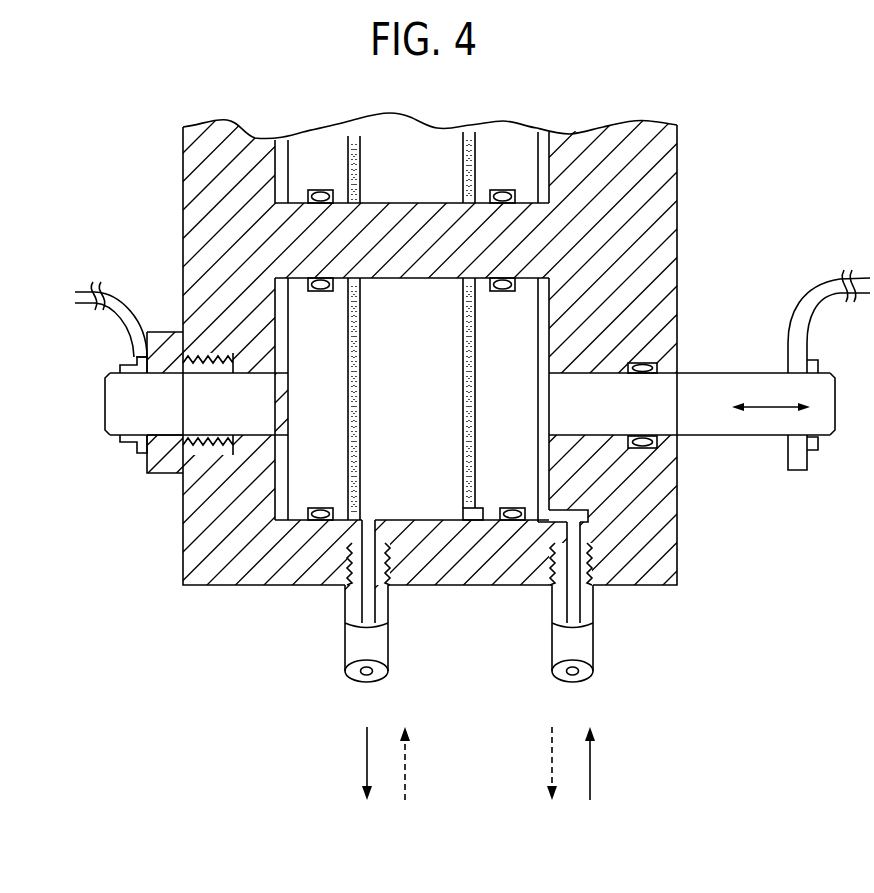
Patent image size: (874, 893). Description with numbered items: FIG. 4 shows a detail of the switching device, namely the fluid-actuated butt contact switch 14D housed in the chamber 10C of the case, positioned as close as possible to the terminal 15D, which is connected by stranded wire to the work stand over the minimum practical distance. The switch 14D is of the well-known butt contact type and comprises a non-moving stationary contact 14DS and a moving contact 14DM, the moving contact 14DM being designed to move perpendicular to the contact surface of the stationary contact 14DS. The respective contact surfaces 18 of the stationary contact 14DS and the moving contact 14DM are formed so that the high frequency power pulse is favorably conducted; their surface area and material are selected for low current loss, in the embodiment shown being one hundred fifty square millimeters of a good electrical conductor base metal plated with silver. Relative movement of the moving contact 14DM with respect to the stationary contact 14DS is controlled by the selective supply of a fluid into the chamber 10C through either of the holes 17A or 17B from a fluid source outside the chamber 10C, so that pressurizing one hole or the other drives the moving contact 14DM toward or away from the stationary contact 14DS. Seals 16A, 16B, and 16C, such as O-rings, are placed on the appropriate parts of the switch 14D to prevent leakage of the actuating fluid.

The chamber 10C is at (180, 650).
The switch 14D is at (202, 513).
The stationary contact 14DS is at (310, 323).
The moving contact 14DM is at (530, 330).
The terminal 15D is at (118, 405).
The seal 16A is at (322, 283).
The seal 16B is at (503, 283).
The seal 16C is at (640, 363).
The hole 17A is at (380, 643).
The hole 17B is at (585, 643).
The contact surface 18 is at (463, 338).